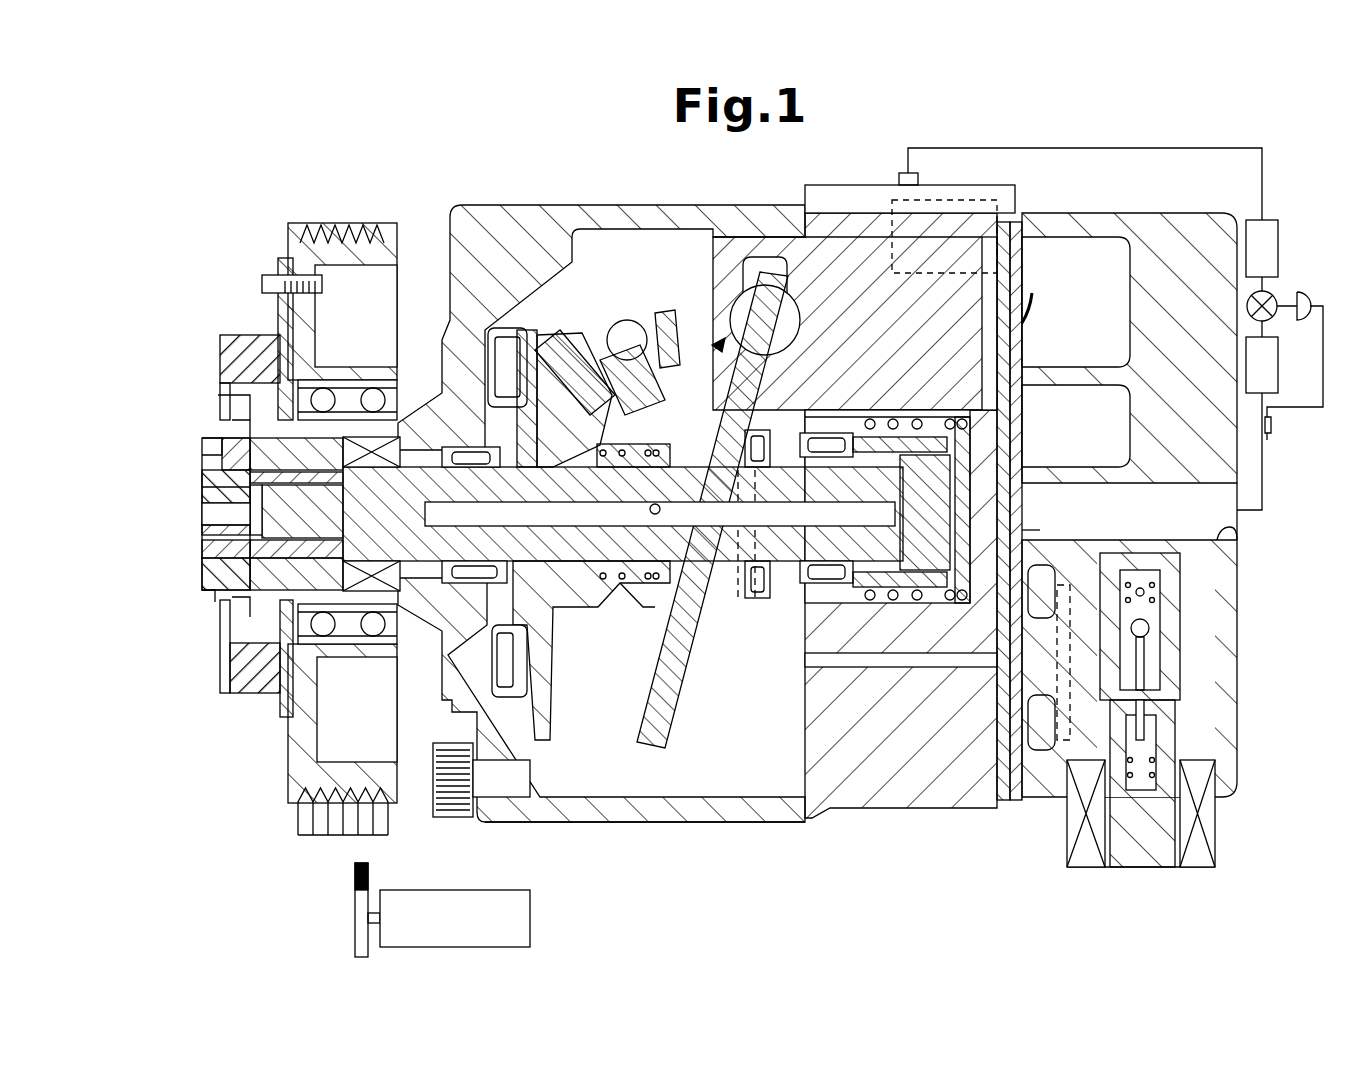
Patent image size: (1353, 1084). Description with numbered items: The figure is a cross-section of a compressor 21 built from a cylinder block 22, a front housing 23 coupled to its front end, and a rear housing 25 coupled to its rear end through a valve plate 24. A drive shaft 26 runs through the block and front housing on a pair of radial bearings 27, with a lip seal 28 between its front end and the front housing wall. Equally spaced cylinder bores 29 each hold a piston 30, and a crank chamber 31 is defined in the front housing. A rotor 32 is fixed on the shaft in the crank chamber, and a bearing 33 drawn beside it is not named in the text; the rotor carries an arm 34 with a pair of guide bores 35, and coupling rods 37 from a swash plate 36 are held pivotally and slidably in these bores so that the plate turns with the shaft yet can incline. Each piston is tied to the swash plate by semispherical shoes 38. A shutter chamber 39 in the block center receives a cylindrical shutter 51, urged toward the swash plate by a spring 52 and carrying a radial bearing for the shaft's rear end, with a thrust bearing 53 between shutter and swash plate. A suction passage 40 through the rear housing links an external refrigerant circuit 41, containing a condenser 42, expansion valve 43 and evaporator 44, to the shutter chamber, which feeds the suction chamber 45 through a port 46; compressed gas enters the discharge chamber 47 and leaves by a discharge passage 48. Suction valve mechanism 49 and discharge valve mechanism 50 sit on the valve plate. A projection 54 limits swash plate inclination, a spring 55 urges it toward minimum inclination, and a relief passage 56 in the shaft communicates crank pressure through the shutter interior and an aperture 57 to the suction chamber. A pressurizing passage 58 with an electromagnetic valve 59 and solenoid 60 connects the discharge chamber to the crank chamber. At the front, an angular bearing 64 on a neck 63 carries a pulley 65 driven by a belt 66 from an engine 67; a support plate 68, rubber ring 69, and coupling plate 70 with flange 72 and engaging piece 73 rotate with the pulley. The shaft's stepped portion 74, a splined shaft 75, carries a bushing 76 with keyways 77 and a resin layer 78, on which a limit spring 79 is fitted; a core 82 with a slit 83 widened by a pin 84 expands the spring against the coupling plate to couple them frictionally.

The compressor 21 is at (788, 862).
The cylinder block 22 is at (905, 804).
The front housing 23 is at (703, 822).
The valve plate 24 is at (996, 803).
The rear housing 25 is at (1240, 640).
The drive shaft 26 is at (742, 590).
The radial bearings 27 is at (472, 584).
The lip seal 28 is at (373, 562).
The cylinder bores 29 is at (822, 237).
The piston 30 is at (740, 207).
The crank chamber 31 is at (710, 769).
The rotor 32 is at (553, 712).
The thrust bearing 33 is at (515, 660).
The arm 34 is at (668, 310).
The guide bores 35 is at (562, 340).
The swash plate 36 is at (665, 720).
The coupling rods 37 is at (622, 320).
The semispherical shoes 38 is at (698, 359).
The shutter chamber 39 is at (903, 602).
The suction passage 40 is at (1245, 533).
The external refrigerant circuit 41 is at (1122, 150).
The condenser 42 is at (1280, 225).
The expansion valve 43 is at (1280, 290).
The evaporator 44 is at (1280, 350).
The suction chamber 45 is at (1083, 452).
The port 46 is at (1015, 533).
The discharge chamber 47 is at (1068, 330).
The discharge passage 48 is at (944, 210).
The suction valve mechanism 49 is at (1010, 398).
The discharge valve mechanism 50 is at (1025, 280).
The shutter 51 is at (778, 340).
The spring 52 is at (962, 603).
The thrust bearing 53 is at (760, 600).
The projection 54 is at (620, 608).
The spring 55 is at (604, 446).
The relief passage 56 is at (655, 502).
The aperture 57 is at (922, 558).
The pressurizing passage 58 is at (810, 665).
The electromagnetic valve 59 is at (1145, 880).
The solenoid 60 is at (1215, 835).
The neck 63 is at (345, 642).
The angular bearing 64 is at (370, 385).
The pulley 65 is at (292, 235).
The belt 66 is at (364, 223).
The engine 67 is at (532, 915).
The support plate 68 is at (278, 318).
The rubber ring 69 is at (218, 340).
The coupling plate 70 is at (218, 400).
The flange 72 is at (218, 372).
The engaging piece 73 is at (202, 440).
The stepped portion 74 is at (304, 514).
The splined shaft 75 is at (262, 440).
The bushing 76 is at (205, 462).
The keyways 77 is at (205, 480).
The resin layer 78 is at (258, 585).
The limit spring 79 is at (205, 582).
The core 82 is at (205, 493).
The slit 83 is at (205, 520).
The pin 84 is at (205, 547).